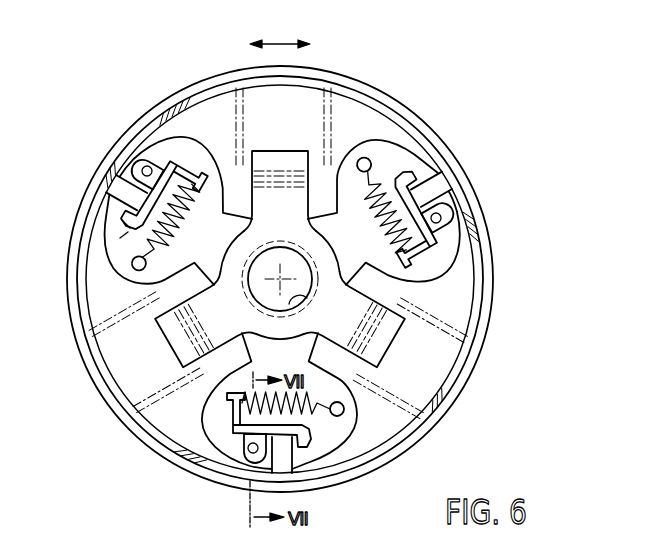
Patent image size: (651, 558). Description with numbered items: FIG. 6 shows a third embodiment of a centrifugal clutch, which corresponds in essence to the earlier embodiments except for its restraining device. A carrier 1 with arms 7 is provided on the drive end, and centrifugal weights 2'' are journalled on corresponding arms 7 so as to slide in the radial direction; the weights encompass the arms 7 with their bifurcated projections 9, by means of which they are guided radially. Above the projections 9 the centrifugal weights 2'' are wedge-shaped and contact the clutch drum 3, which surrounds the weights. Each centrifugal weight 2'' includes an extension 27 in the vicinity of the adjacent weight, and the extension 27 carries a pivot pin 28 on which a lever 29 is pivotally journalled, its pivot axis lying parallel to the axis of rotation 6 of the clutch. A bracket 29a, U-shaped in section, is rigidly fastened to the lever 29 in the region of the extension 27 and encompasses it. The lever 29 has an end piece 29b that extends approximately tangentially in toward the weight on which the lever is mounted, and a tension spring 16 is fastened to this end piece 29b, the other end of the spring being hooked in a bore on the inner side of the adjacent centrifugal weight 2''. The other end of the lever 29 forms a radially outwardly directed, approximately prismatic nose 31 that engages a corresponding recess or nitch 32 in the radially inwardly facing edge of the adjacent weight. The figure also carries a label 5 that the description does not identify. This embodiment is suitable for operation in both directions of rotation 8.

The carrier 1 is at (287, 220).
The centrifugal weights 2'' is at (279, 273).
The clutch drum 3 is at (488, 270).
The bore 5 is at (300, 297).
The axis of rotation 6 is at (278, 278).
The arms 7 is at (377, 338).
The directions of rotation 8 is at (283, 43).
The bifurcated projections 9 is at (353, 283).
The tension spring 16 is at (410, 190).
The extension 27 is at (160, 147).
The pivot pin 28 is at (145, 168).
The lever 29 is at (150, 207).
The bracket 29a is at (140, 186).
The end piece 29b is at (193, 173).
The nose 31 is at (125, 236).
The recess 32 is at (127, 223).